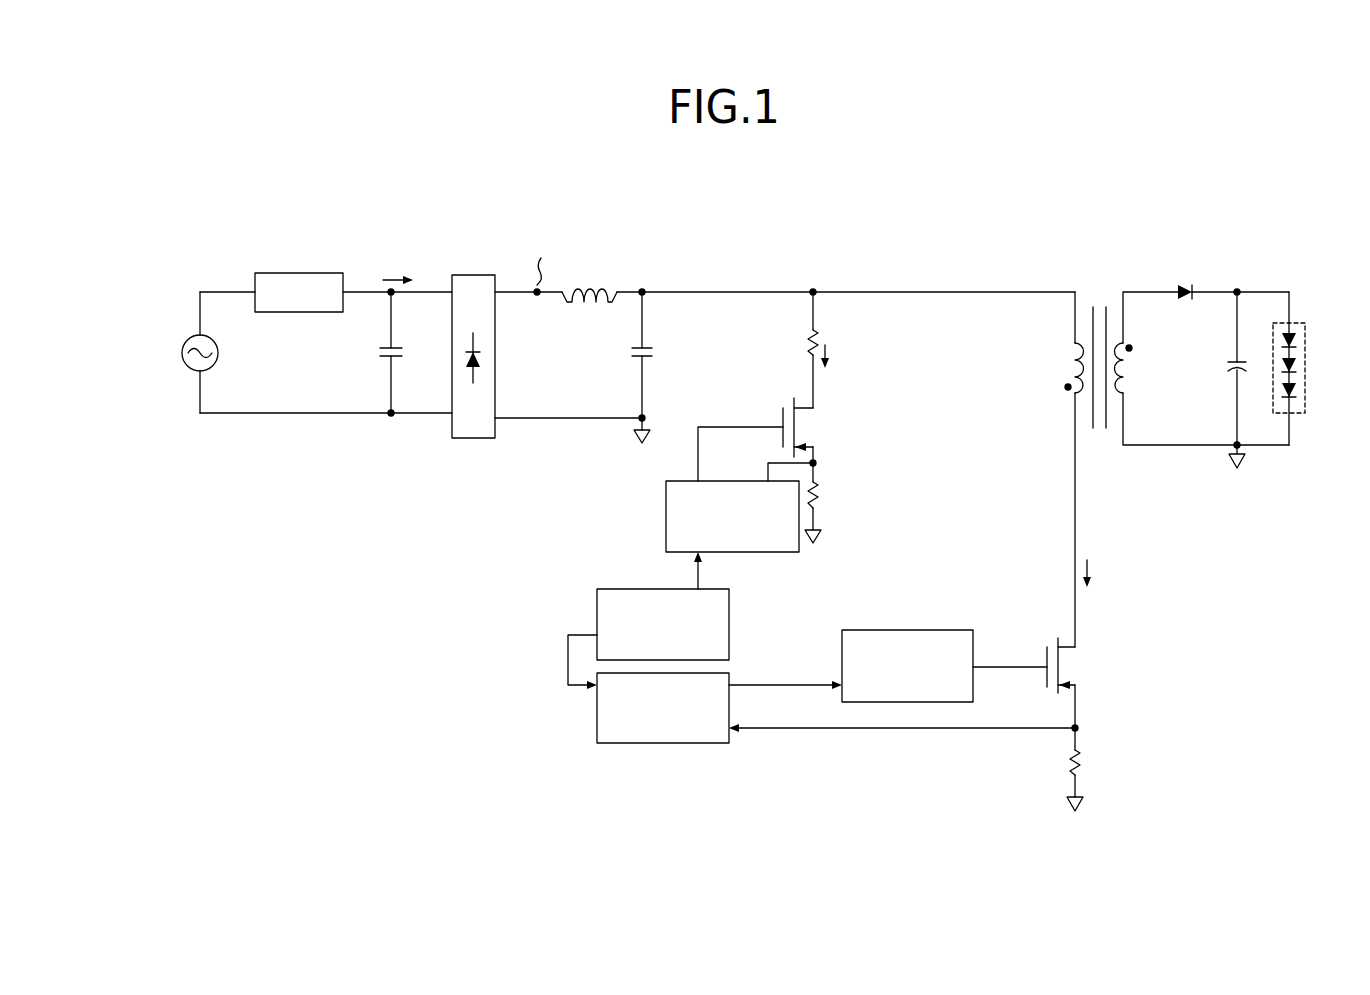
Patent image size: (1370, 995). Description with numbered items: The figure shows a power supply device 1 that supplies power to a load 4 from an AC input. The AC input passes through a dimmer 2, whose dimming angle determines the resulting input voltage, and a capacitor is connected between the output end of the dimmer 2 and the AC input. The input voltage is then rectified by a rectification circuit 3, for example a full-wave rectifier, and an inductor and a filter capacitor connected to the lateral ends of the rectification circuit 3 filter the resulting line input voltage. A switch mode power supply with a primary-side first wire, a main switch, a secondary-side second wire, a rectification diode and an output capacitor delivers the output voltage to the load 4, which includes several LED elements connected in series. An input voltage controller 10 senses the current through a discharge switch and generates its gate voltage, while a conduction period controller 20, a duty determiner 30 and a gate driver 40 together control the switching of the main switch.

The power supply device 1 is at (1039, 218).
The dimmer 2 is at (310, 272).
The rectification circuit 3 is at (475, 269).
The load 4 is at (1307, 363).
The input voltage controller 10 is at (666, 515).
The conduction period controller 20 is at (597, 611).
The duty determiner 30 is at (597, 718).
The gate driver 40 is at (907, 629).